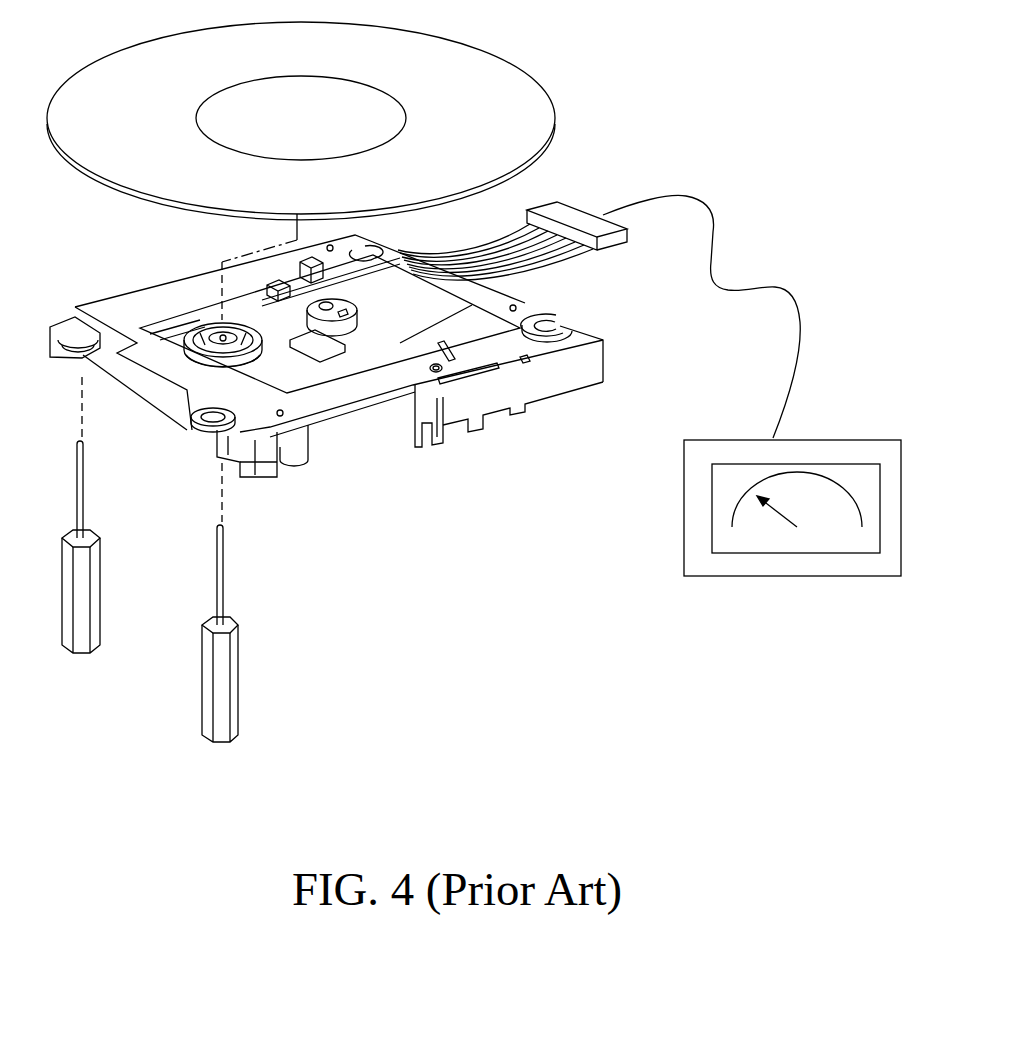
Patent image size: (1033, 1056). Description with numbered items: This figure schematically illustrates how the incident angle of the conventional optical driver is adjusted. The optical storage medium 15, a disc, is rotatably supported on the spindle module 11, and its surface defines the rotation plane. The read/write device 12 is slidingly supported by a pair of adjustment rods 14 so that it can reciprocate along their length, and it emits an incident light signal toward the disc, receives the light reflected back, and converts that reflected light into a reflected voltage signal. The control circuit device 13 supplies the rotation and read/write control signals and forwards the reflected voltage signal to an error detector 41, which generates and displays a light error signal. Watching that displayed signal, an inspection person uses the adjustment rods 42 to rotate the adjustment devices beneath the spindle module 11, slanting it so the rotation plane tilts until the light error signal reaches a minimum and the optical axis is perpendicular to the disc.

The spindle module 11 is at (192, 368).
The read/write device 12 is at (335, 323).
The control circuit device 13 is at (592, 220).
The adjustment rods 14 is at (222, 327).
The optical storage medium 15 is at (512, 78).
The error detector 41 is at (785, 577).
The adjustment rods 42 is at (95, 602).